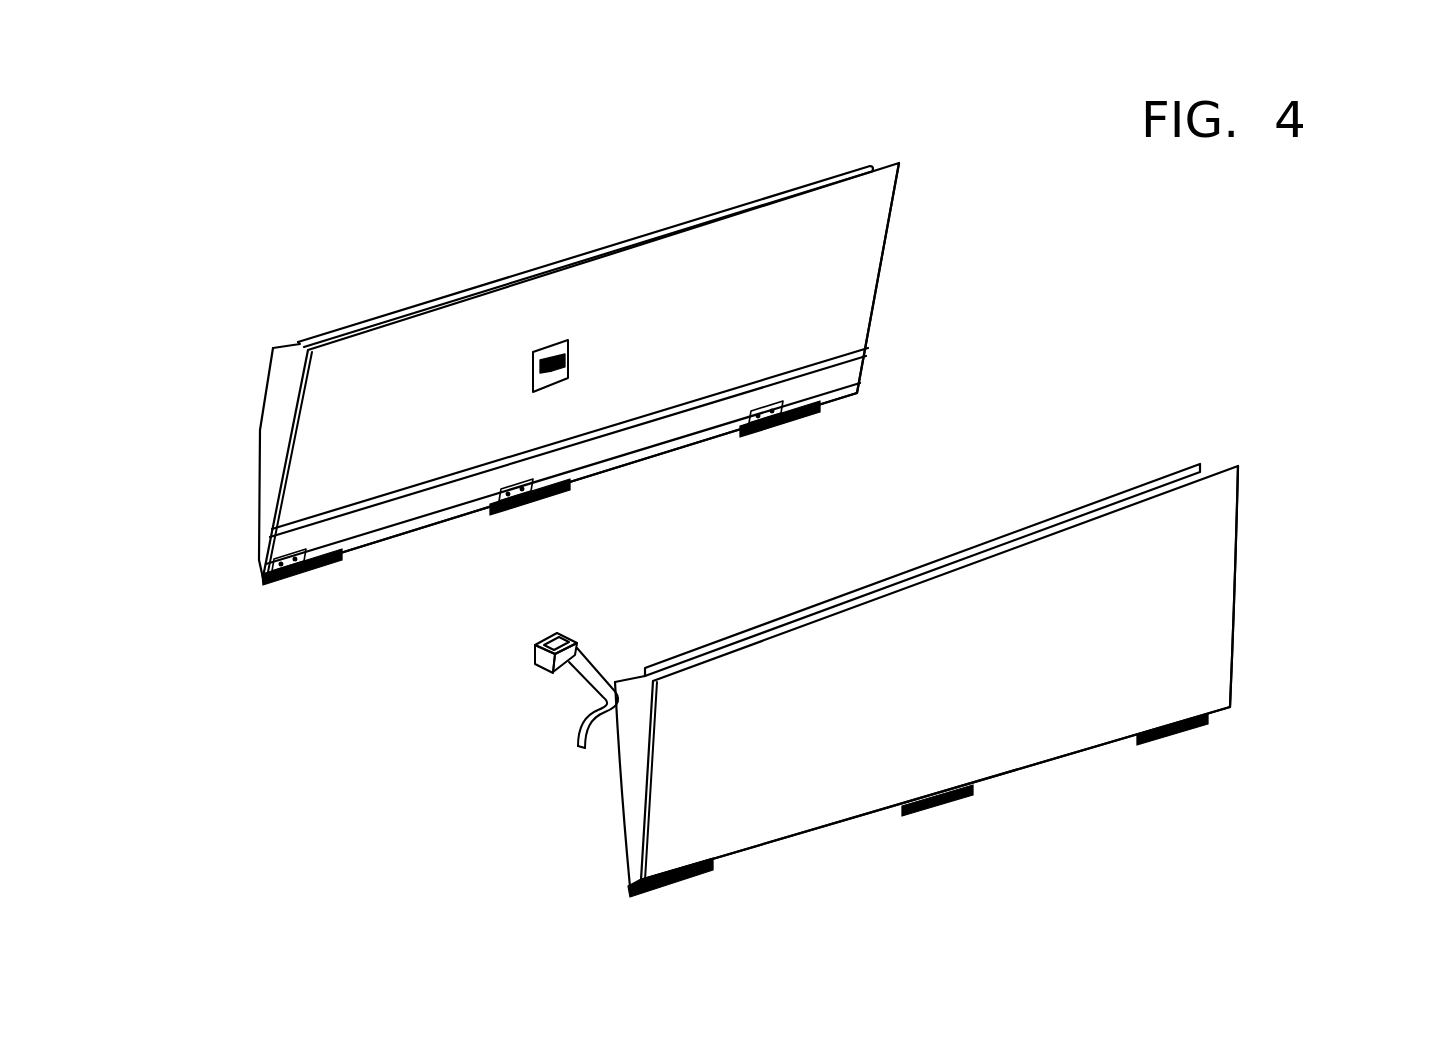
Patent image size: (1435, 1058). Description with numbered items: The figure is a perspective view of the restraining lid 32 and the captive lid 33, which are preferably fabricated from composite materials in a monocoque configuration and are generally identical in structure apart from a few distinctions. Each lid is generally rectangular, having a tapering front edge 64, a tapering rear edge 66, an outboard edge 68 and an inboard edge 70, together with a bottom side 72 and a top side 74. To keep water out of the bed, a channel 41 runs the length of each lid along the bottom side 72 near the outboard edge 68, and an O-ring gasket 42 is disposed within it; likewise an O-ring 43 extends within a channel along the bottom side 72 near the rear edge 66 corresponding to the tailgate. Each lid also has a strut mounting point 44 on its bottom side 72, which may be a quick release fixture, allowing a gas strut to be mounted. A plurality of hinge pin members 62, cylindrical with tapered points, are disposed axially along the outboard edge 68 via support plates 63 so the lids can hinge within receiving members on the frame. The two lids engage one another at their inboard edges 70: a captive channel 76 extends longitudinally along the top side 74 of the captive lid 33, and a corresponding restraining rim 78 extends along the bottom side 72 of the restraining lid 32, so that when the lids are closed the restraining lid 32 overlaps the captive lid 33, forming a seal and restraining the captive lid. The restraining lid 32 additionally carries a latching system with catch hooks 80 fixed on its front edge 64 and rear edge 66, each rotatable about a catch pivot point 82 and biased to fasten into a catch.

The restraining lid 32 is at (1016, 625).
The captive lid 33 is at (560, 329).
The channel 41 is at (618, 425).
The O-ring gasket 42 is at (707, 410).
The O-ring 43 is at (267, 515).
The strut mounting point 44 is at (533, 368).
The hinge pin member 62 is at (310, 572).
The support plate 63 is at (264, 566).
The front edge 64 is at (905, 230).
The rear edge 66 is at (273, 443).
The outboard edge 68 is at (400, 532).
The inboard edge 70 is at (297, 342).
The bottom side 72 is at (790, 328).
The top side 74 is at (990, 683).
The captive channel 76 is at (558, 263).
The restraining rim 78 is at (1160, 470).
The catch hook 80 is at (583, 735).
The catch pivot point 82 is at (533, 663).